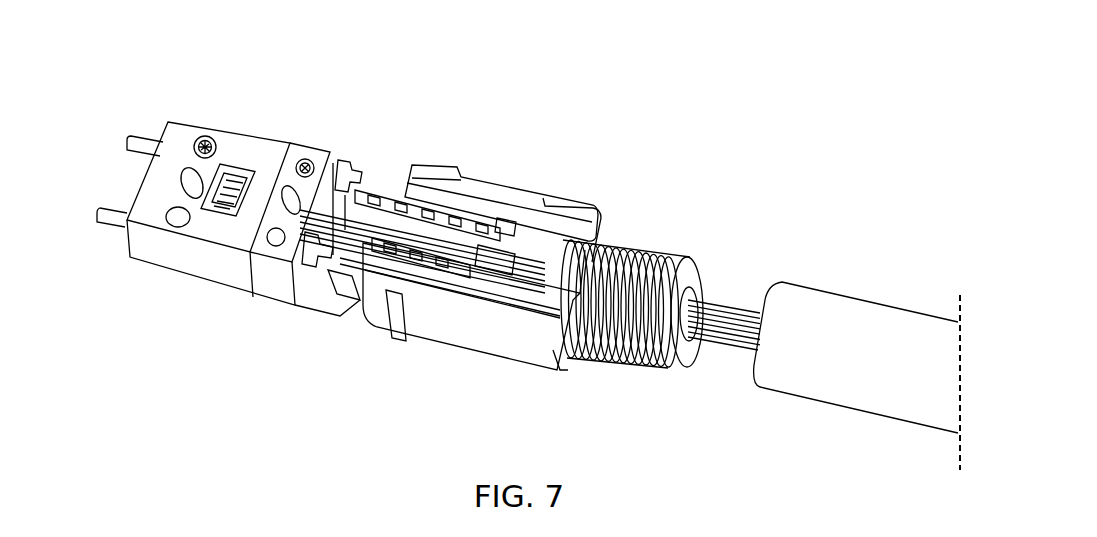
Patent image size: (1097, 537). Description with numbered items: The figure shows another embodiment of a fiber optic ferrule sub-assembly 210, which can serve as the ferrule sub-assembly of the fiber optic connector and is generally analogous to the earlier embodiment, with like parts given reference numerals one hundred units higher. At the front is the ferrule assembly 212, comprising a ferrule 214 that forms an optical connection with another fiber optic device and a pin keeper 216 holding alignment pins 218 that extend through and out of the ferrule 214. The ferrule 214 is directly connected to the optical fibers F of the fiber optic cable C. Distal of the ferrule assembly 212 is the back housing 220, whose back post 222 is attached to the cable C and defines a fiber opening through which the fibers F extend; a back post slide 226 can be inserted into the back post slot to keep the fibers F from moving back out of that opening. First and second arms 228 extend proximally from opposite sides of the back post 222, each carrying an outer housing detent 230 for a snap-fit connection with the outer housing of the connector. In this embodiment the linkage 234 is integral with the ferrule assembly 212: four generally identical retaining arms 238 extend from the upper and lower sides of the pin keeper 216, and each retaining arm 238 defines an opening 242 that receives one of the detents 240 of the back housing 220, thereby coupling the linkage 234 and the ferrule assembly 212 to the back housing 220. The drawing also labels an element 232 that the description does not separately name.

The fiber optic ferrule sub-assembly 210 is at (517, 82).
The ferrule assembly 212 is at (292, 97).
The ferrule 214 is at (187, 150).
The pin keeper 216 is at (350, 146).
The alignment pins 218 is at (105, 213).
The back housing 220 is at (616, 195).
The back post 222 is at (603, 333).
The back post slide 226 is at (640, 273).
The arms 228 is at (483, 188).
The outer housing detents 230 is at (447, 165).
The ferrule holder 232 is at (356, 295).
The linkage 234 is at (350, 238).
The retaining arm 238 is at (393, 192).
The detents 240 is at (504, 250).
The opening 242 is at (503, 222).
The optical fibers F is at (725, 317).
The fiber optic cable C is at (843, 343).